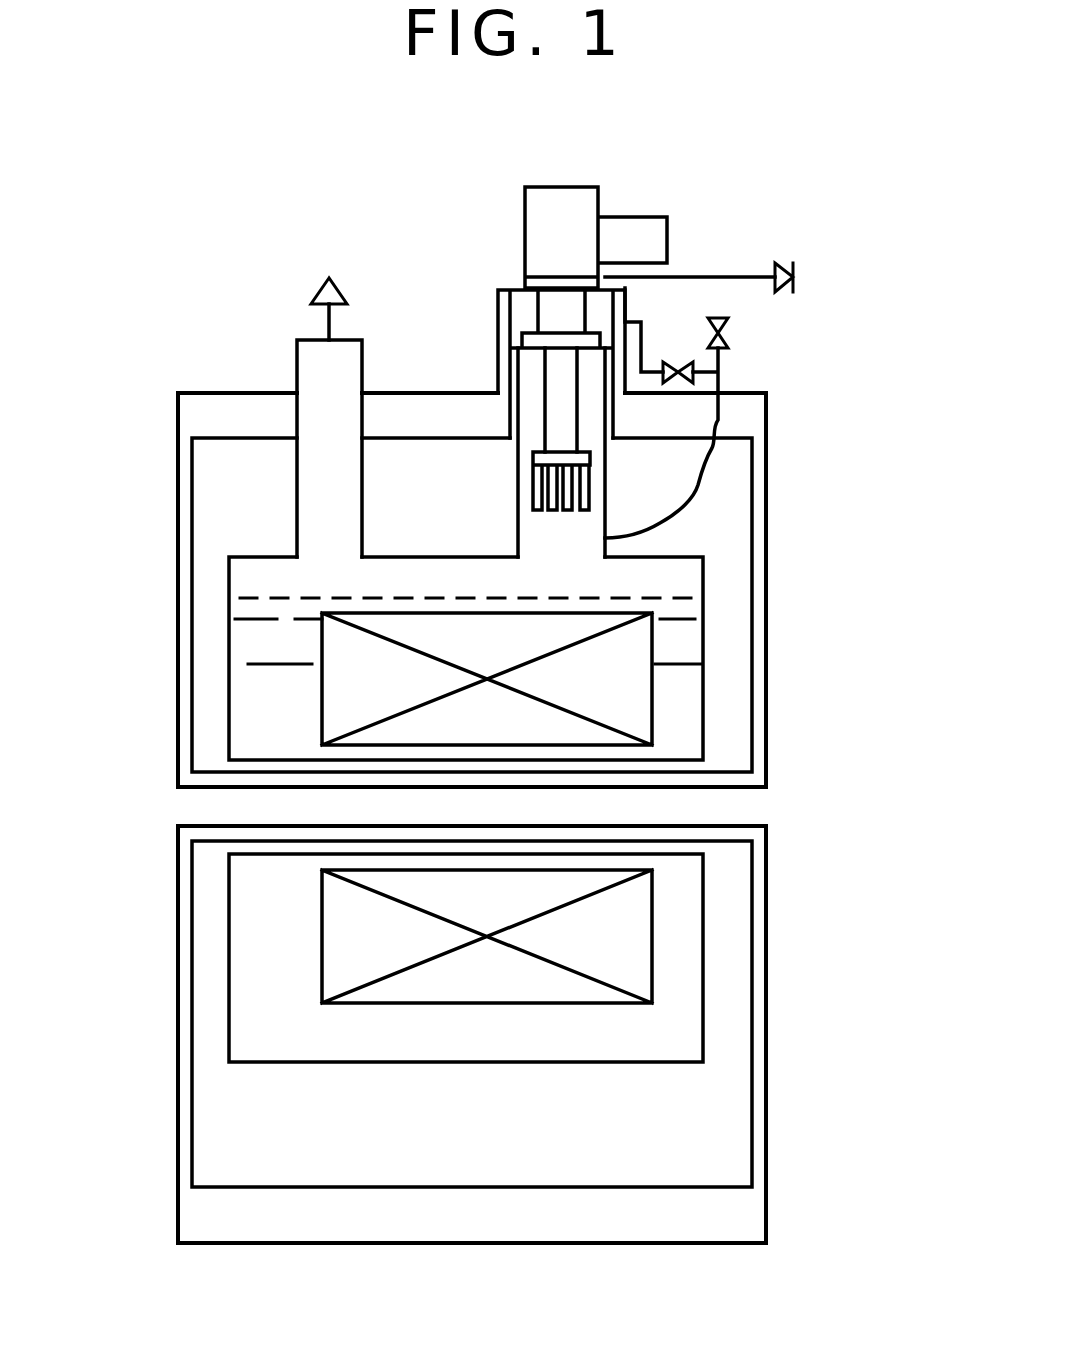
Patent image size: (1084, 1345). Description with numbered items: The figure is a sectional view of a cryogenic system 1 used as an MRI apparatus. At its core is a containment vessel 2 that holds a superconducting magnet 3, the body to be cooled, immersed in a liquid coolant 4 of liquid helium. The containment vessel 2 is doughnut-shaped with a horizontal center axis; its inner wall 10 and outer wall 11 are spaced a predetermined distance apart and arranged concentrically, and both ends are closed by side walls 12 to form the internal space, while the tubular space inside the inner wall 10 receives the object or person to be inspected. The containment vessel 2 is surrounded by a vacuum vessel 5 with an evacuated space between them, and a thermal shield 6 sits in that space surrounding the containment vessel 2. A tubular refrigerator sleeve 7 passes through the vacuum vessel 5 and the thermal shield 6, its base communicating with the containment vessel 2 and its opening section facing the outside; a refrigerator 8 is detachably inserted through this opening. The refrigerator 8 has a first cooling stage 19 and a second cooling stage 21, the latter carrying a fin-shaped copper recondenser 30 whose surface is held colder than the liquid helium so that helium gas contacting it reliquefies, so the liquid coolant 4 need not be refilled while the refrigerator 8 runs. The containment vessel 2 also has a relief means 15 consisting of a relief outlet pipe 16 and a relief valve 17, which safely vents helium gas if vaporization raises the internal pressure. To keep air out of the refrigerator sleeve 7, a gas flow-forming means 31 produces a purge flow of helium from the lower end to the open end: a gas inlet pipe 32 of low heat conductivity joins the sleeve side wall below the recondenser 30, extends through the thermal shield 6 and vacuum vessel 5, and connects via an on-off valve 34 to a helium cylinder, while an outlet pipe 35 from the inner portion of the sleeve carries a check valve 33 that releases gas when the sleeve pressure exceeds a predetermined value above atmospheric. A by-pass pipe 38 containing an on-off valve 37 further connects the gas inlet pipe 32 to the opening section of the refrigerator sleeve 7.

The cryogenic system 1 is at (904, 500).
The containment vessel 2 is at (703, 675).
The superconducting magnet 3 is at (653, 902).
The liquid coolant 4 is at (248, 898).
The vacuum vessel 5 is at (766, 428).
The thermal shield 6 is at (753, 618).
The refrigerator sleeve 7 is at (605, 477).
The refrigerator 8 is at (555, 208).
The inner wall 10 is at (270, 760).
The outer wall 11 is at (258, 557).
The side wall 12 is at (229, 671).
The relief means 15 is at (263, 364).
The relief outlet pipe 16 is at (297, 362).
The relief valve 17 is at (318, 292).
The first cooling stage 19 is at (547, 342).
The second cooling stage 21 is at (540, 452).
The recondenser 30 is at (533, 497).
The gas flow-forming means 31 is at (696, 512).
The gas inlet pipe 32 is at (660, 523).
The check valve 33 is at (782, 265).
The on-off valve 34 is at (730, 333).
The outlet pipe 35 is at (701, 277).
The on-off valve 37 is at (697, 366).
The by-pass pipe 38 is at (650, 372).